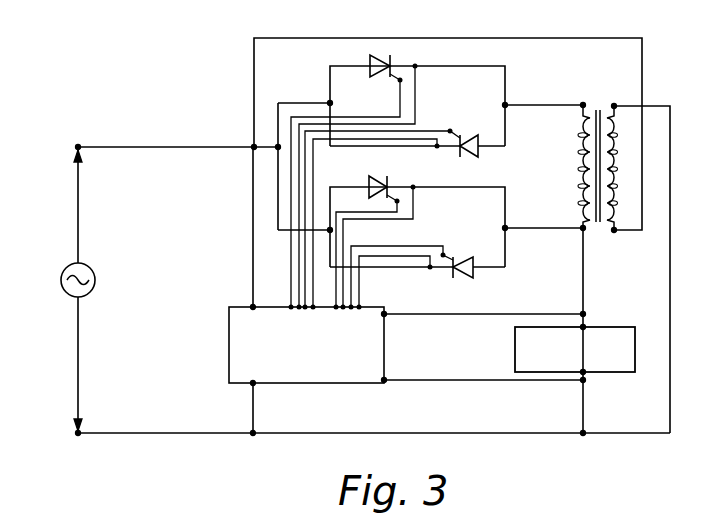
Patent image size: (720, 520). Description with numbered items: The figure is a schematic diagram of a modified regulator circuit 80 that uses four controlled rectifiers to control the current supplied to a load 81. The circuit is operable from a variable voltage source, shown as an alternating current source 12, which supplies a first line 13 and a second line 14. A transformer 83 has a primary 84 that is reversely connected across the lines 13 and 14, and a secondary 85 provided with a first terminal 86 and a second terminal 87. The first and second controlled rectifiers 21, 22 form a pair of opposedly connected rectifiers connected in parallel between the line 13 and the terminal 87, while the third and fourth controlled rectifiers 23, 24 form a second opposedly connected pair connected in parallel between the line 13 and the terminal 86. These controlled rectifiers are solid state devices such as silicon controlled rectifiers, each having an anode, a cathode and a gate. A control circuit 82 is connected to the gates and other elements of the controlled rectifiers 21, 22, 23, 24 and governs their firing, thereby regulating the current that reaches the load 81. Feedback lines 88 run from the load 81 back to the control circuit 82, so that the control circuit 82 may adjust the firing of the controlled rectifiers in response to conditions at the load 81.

The alternating current source 12 is at (93, 271).
The line 13 is at (147, 145).
The line 14 is at (158, 432).
The first controlled rectifier 21 is at (384, 176).
The second controlled rectifier 22 is at (467, 257).
The third controlled rectifier 23 is at (370, 62).
The fourth controlled rectifier 24 is at (477, 136).
The modified regulator circuit 80 is at (233, 226).
The load 81 is at (636, 350).
The control circuit 82 is at (228, 352).
The transformer 83 is at (599, 111).
The primary 84 is at (607, 137).
The secondary 85 is at (580, 162).
The terminal 86 is at (587, 103).
The terminal 87 is at (581, 231).
The feedback lines 88 is at (475, 343).